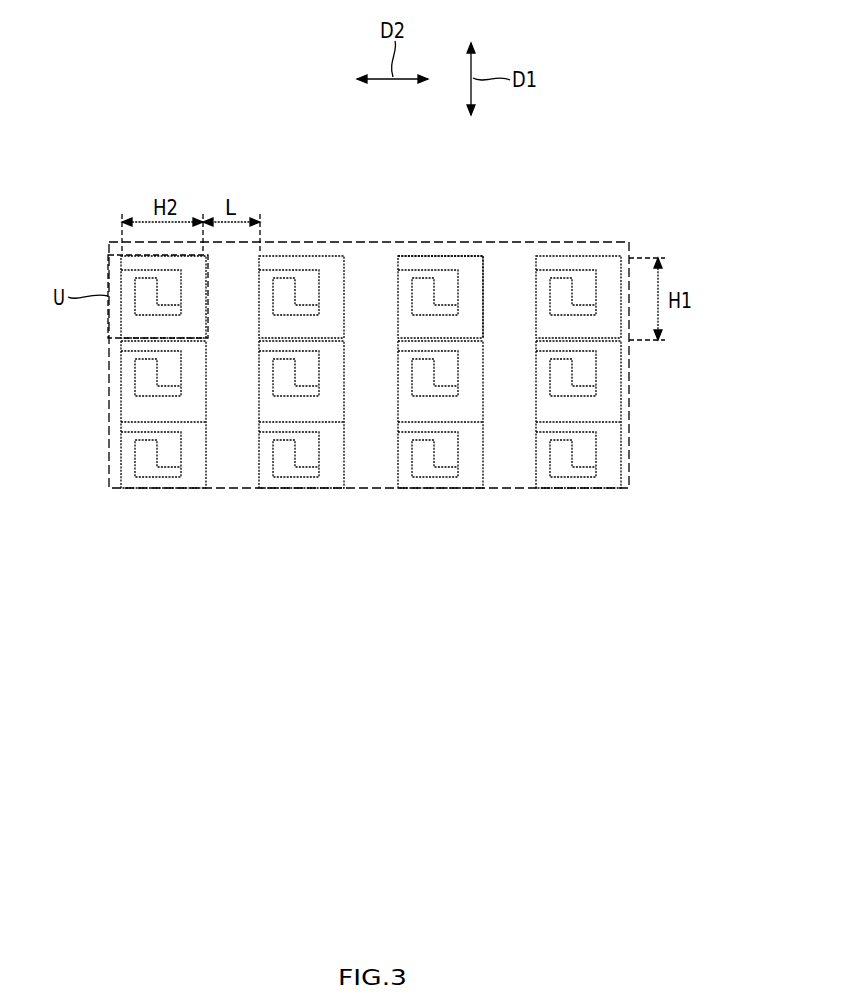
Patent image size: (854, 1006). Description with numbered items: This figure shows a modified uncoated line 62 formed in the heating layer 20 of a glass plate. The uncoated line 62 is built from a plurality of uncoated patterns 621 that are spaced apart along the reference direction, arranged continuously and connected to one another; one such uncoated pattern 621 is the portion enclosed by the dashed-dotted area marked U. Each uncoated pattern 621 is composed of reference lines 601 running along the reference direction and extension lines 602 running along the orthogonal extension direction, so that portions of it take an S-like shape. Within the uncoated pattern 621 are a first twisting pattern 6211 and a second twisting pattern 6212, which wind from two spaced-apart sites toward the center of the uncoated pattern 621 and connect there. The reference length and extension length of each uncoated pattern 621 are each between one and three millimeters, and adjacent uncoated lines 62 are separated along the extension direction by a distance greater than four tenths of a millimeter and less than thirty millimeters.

The heating layer 20 is at (367, 256).
The uncoated line 62 is at (184, 492).
The uncoated pattern 621 is at (371, 420).
The first twisting pattern 6211 is at (206, 308).
The second twisting pattern 6212 is at (182, 288).
The reference line 601 is at (483, 285).
The extension line 602 is at (438, 257).